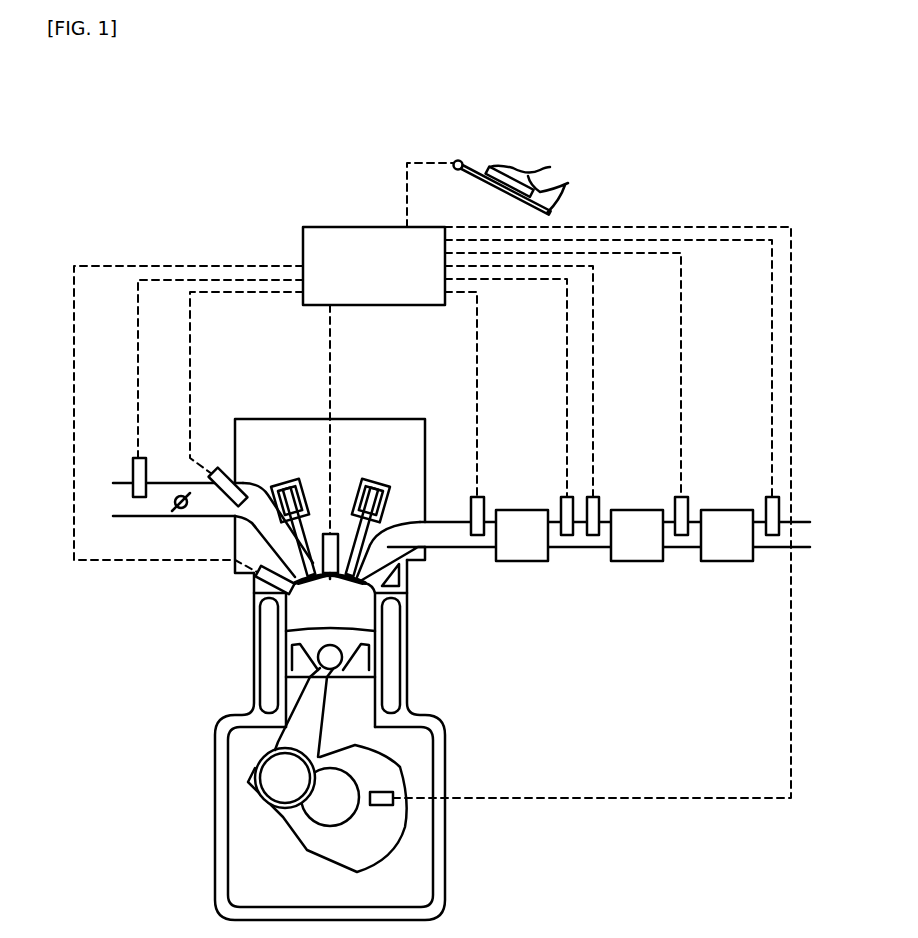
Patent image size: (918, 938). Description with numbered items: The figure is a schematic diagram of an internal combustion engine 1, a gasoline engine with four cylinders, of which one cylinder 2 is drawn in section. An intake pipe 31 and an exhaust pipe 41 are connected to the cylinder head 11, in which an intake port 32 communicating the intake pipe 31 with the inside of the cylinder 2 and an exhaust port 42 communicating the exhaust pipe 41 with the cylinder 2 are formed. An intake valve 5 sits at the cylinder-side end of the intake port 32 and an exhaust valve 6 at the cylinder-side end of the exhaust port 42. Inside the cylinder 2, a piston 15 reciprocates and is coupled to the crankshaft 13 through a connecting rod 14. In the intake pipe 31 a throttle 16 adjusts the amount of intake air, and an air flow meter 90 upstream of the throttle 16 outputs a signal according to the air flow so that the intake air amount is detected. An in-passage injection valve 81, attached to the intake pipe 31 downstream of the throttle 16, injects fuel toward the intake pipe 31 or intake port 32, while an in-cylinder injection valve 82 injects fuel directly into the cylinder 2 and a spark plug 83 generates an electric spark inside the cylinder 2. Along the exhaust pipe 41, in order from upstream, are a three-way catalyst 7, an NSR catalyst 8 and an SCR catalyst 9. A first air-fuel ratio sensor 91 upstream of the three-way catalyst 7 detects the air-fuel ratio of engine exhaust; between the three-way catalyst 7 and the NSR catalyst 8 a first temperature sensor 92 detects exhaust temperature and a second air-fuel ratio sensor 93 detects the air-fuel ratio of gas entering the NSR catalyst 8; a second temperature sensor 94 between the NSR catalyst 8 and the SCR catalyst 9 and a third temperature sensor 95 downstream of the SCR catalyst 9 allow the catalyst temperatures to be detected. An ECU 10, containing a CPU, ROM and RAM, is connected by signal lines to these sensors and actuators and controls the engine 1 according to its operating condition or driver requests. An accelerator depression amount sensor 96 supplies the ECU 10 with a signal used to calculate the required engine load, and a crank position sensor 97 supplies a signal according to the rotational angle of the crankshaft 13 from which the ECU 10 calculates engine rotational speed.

The internal combustion engine 1 is at (152, 646).
The cylinder 2 is at (312, 610).
The intake valve 5 is at (310, 595).
The exhaust valve 6 is at (353, 582).
The three-way catalyst 7 is at (520, 562).
The NOx storage reduction catalyst 8 is at (635, 562).
The selective catalytic reduction NOx catalyst 9 is at (723, 562).
The ECU 10 is at (302, 304).
The cylinder head 11 is at (358, 418).
The crankshaft 13 is at (357, 818).
The connecting rod 14 is at (303, 687).
The piston 15 is at (348, 658).
The throttle 16 is at (178, 490).
The intake pipe 31 is at (132, 517).
The intake port 32 is at (257, 537).
The exhaust pipe 41 is at (582, 552).
The exhaust port 42 is at (417, 561).
The in-passage injection valve 81 is at (220, 470).
The in-cylinder injection valve 82 is at (253, 585).
The spark plug 83 is at (333, 580).
The air flow meter 90 is at (132, 463).
The first air-fuel ratio sensor 91 is at (487, 502).
The first temperature sensor 92 is at (560, 503).
The second air-fuel ratio sensor 93 is at (600, 503).
The second temperature sensor 94 is at (688, 502).
The third temperature sensor 95 is at (766, 498).
The accelerator depression amount sensor 96 is at (463, 161).
The crank position sensor 97 is at (377, 792).